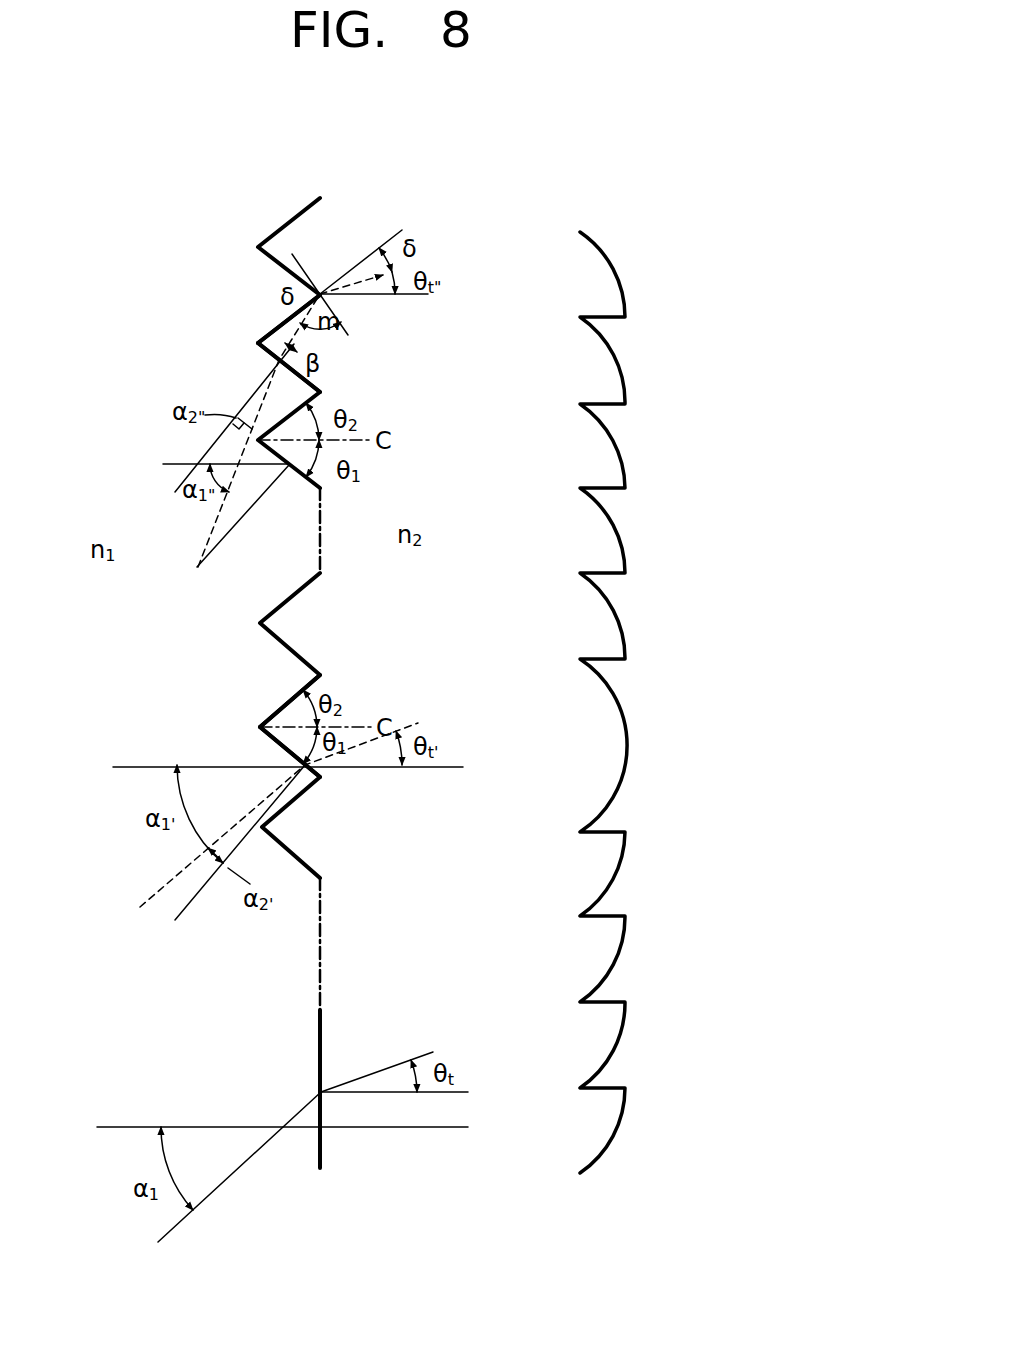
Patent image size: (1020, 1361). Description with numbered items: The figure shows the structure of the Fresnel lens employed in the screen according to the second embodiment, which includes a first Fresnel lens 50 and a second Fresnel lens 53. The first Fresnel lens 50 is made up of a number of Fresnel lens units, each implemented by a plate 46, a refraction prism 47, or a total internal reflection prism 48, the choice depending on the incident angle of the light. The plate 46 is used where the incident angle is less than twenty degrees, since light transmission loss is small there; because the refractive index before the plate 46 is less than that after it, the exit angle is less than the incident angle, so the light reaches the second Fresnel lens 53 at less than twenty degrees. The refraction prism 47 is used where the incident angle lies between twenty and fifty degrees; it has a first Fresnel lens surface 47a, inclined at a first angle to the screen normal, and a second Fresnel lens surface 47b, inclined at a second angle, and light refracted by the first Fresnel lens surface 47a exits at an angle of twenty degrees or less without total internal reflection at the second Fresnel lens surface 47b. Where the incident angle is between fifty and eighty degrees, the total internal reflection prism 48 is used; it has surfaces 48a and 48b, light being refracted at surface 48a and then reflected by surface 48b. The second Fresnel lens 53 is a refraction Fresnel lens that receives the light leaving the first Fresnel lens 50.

The first Fresnel lens 50 is at (207, 207).
The second Fresnel lens 53 is at (612, 252).
The total internal reflection prism 48 is at (212, 270).
The reflection prism surface 48a is at (258, 348).
The reflection prism surface 48b is at (283, 324).
The refraction prism 47 is at (208, 623).
The first Fresnel lens surface 47a is at (275, 740).
The second Fresnel lens surface 47b is at (287, 707).
The plate 46 is at (487, 1000).